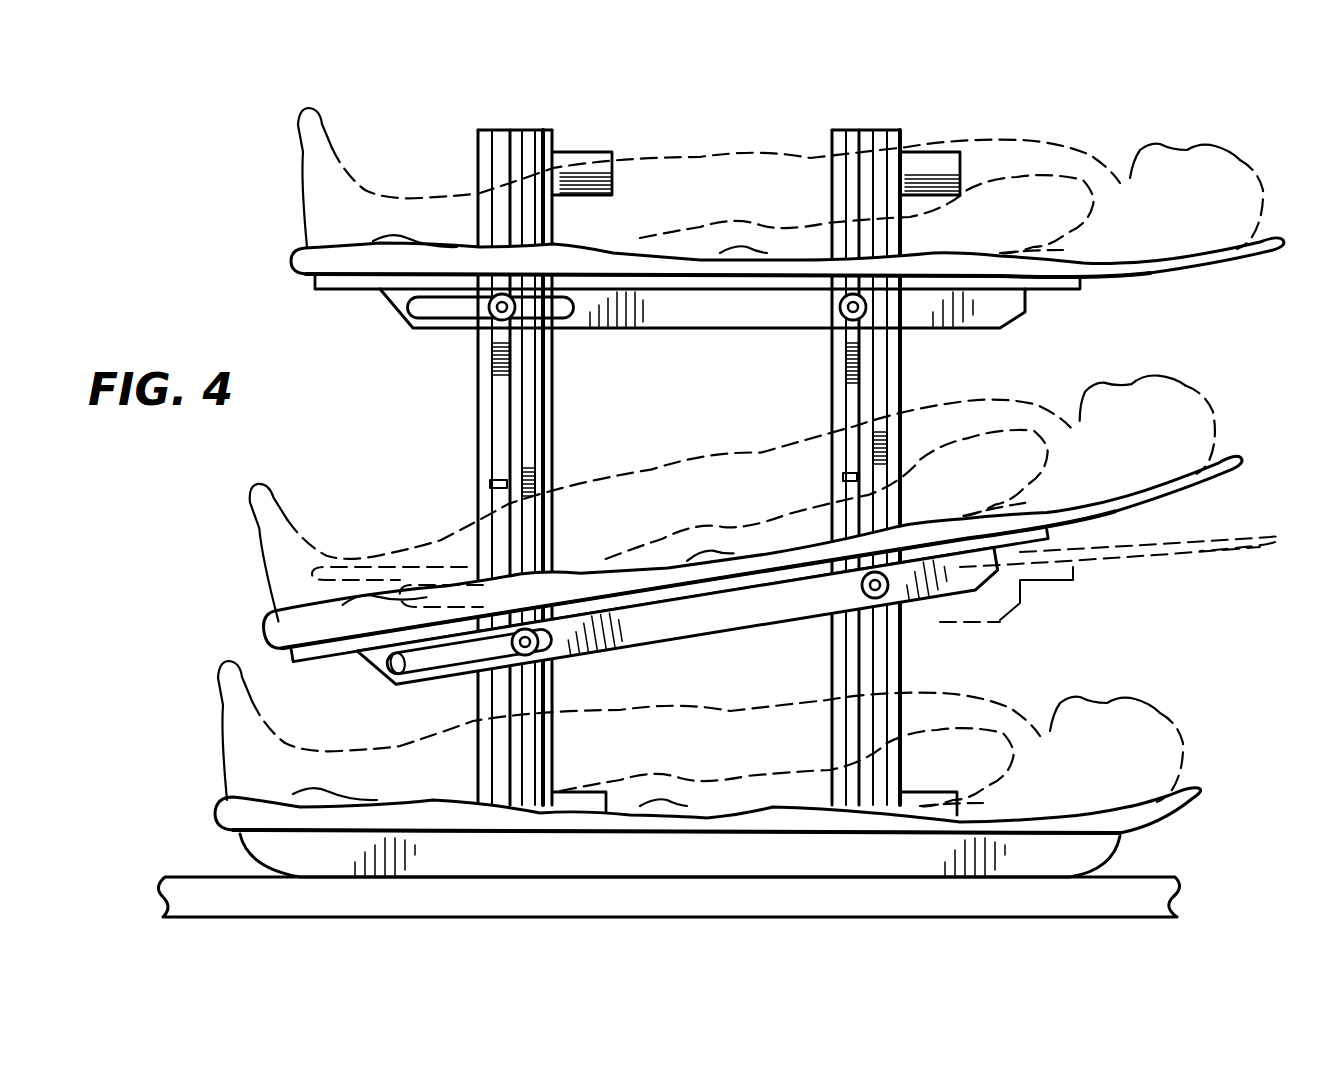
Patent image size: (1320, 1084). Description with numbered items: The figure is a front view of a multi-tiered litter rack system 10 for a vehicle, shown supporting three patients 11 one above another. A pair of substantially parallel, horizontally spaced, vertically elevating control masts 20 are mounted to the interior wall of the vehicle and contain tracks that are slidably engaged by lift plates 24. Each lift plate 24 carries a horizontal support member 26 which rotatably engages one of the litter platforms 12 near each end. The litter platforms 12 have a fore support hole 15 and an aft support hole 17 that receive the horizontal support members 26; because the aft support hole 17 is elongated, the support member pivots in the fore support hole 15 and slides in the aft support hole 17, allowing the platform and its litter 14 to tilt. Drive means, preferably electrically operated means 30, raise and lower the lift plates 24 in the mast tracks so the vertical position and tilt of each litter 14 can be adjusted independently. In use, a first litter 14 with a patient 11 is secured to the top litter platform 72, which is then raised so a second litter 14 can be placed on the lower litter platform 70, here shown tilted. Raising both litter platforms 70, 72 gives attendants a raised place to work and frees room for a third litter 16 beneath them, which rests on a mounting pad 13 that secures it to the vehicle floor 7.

The vehicle floor 7 is at (200, 875).
The foot support apparatus 10 is at (685, 447).
The patient 11 is at (1237, 150).
The litter platform 12 is at (1020, 310).
The mounting pad 13 is at (1117, 840).
The litter 14 is at (1237, 263).
The fore support hole 15 is at (867, 307).
The third litter 16 is at (1180, 803).
The aft support hole 17 is at (412, 300).
The control mast 20 is at (513, 130).
The lift plate 24 is at (500, 417).
The horizontal support member 26 is at (515, 310).
The electrically operated means 30 is at (575, 162).
The lower litter platform 70 is at (722, 640).
The top litter platform 72 is at (744, 333).